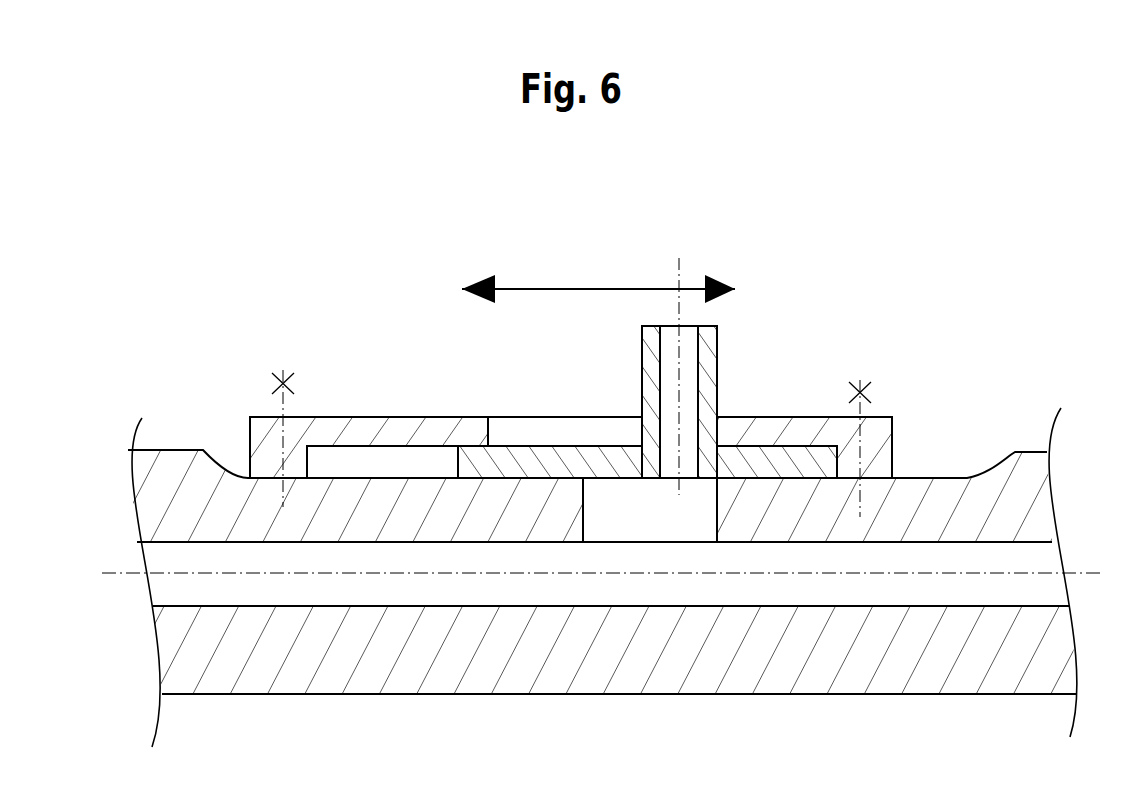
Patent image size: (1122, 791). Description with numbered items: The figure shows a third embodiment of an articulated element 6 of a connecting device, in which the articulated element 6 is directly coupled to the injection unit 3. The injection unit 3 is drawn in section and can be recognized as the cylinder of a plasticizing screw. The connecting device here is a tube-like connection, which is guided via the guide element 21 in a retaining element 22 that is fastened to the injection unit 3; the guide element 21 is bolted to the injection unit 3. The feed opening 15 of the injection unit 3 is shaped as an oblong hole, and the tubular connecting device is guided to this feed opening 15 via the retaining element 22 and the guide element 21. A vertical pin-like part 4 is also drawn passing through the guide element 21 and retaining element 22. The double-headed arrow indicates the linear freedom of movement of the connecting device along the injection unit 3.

The injection unit 3 is at (947, 492).
The pin 4 is at (713, 387).
The articulated element 6 is at (360, 303).
The feed opening 15 is at (664, 525).
The guide element 21 is at (875, 446).
The retaining element 22 is at (607, 455).